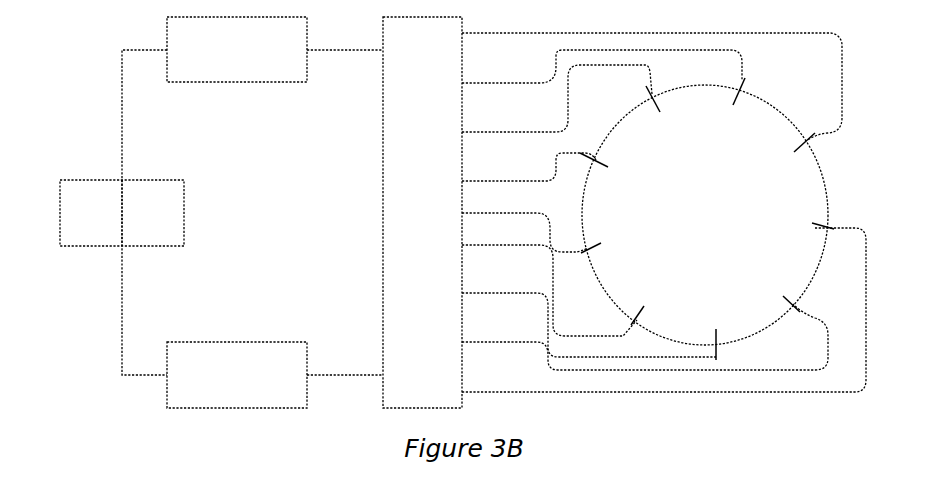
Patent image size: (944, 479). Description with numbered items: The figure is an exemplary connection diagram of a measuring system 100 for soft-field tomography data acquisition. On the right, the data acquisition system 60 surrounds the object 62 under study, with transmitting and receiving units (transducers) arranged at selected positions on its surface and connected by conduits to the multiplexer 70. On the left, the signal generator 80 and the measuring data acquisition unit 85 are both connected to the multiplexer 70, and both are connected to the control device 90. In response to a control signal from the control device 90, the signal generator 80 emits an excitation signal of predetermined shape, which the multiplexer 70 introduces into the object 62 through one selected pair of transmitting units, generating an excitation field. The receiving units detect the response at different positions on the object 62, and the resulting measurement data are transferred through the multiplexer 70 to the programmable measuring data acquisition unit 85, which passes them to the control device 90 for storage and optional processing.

The measuring system 100 is at (93, 53).
The signal generator 80 is at (275, 49).
The measuring data acquisition unit 85 is at (275, 375).
The control device 90 is at (122, 213).
The multiplexer 70 is at (422, 212).
The data acquisition system 60 is at (822, 97).
The object 62 is at (713, 213).